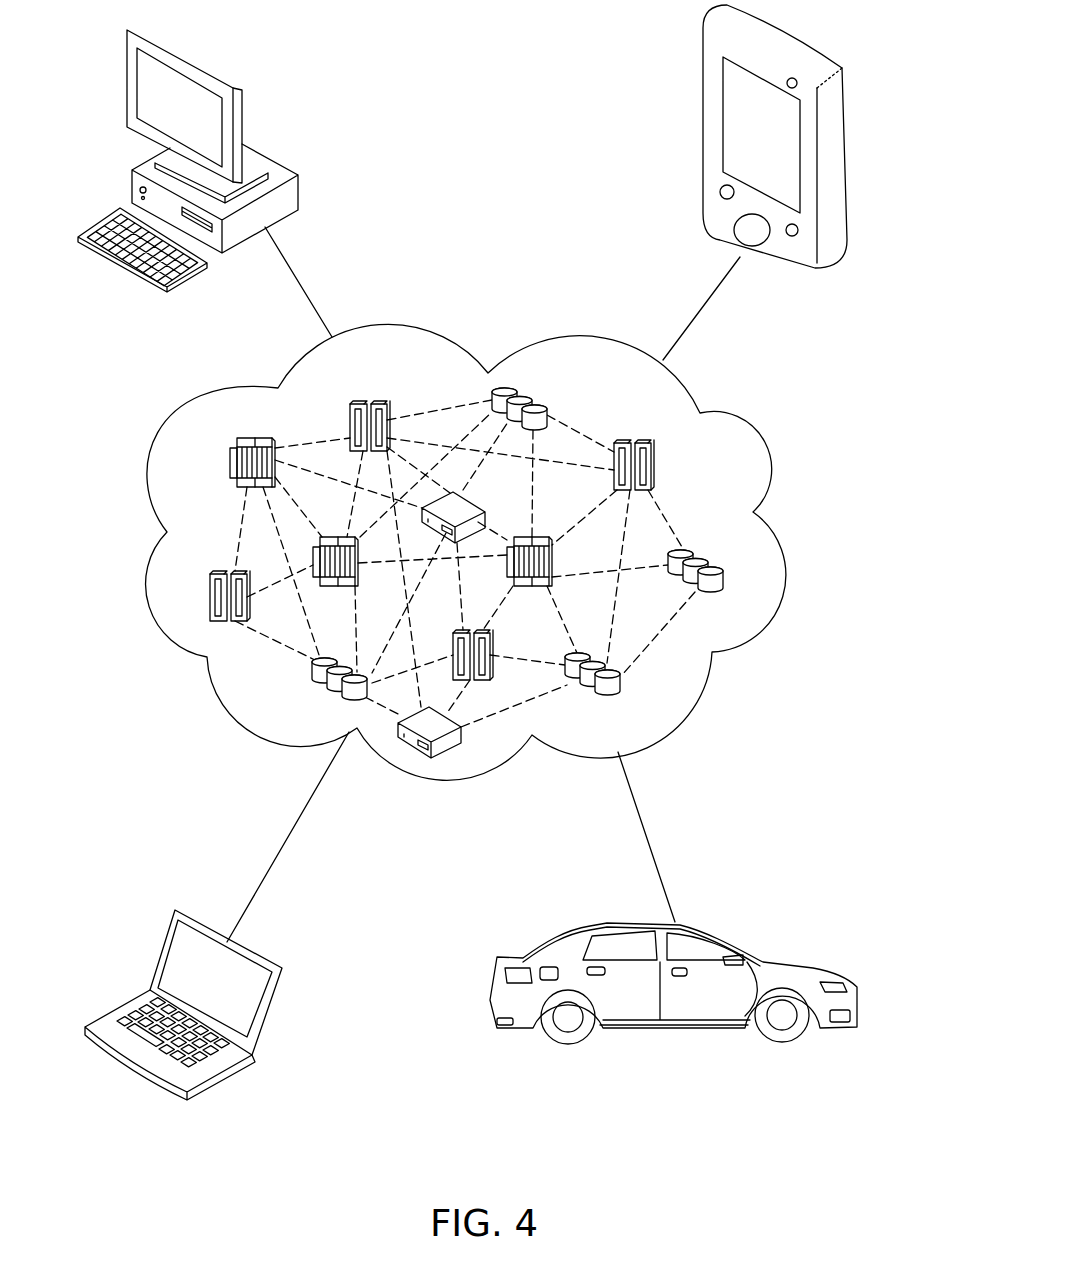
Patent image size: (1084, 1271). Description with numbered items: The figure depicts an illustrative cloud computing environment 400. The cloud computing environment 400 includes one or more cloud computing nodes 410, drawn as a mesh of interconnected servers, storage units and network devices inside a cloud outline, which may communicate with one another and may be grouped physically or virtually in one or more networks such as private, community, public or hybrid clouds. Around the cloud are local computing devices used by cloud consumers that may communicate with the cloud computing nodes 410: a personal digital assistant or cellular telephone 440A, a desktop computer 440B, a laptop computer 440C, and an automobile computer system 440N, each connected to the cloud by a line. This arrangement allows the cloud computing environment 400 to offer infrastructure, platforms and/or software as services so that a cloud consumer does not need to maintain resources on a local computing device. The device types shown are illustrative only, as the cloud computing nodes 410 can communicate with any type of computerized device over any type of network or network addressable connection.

The cloud computing environment 400 is at (755, 628).
The cloud computing nodes 410 is at (700, 488).
The personal digital assistant (PDA) or cellular telephone 440A is at (702, 85).
The desktop computer 440B is at (300, 188).
The laptop computer 440C is at (282, 978).
The automobile computer system 440N is at (857, 987).